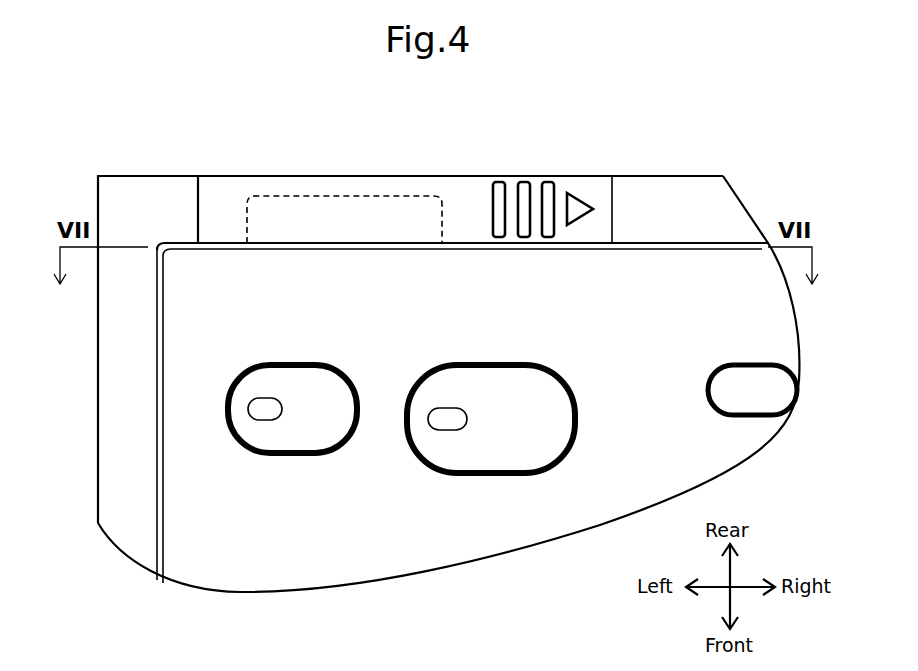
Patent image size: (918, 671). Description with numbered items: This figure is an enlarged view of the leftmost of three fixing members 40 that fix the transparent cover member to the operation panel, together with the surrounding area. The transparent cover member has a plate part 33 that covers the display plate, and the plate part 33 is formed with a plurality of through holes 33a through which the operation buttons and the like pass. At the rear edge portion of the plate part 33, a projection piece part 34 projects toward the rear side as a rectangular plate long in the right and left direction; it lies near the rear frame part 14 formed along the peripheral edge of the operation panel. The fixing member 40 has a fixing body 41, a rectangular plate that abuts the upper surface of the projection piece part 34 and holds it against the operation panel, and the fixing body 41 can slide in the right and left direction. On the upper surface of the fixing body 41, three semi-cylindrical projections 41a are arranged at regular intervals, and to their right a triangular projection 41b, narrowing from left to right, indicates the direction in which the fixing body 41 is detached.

The fixing member 40 is at (255, 172).
The fixing body 41 is at (313, 188).
The projection piece part 34 is at (410, 192).
The projections 41a is at (547, 188).
The projection 41b is at (572, 205).
The rear frame part 14 is at (680, 186).
The plate part 33 is at (227, 560).
The through holes 33a is at (298, 375).